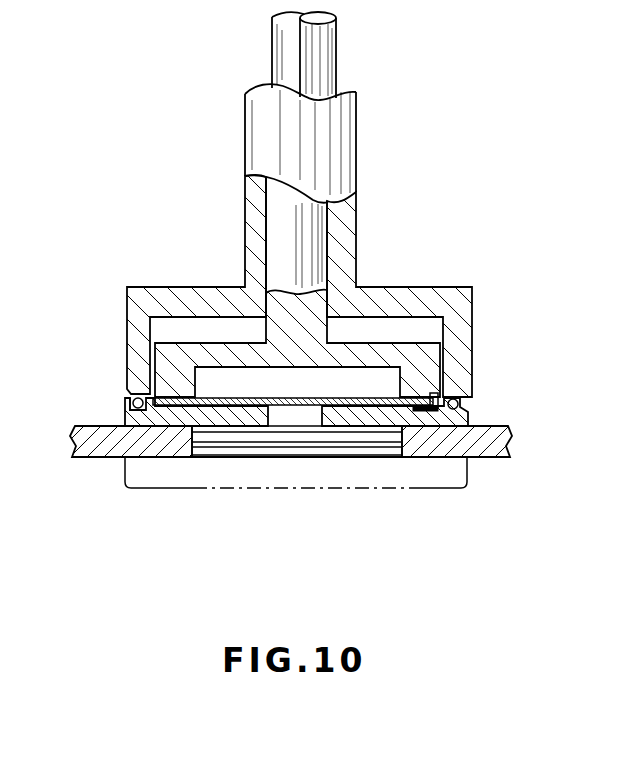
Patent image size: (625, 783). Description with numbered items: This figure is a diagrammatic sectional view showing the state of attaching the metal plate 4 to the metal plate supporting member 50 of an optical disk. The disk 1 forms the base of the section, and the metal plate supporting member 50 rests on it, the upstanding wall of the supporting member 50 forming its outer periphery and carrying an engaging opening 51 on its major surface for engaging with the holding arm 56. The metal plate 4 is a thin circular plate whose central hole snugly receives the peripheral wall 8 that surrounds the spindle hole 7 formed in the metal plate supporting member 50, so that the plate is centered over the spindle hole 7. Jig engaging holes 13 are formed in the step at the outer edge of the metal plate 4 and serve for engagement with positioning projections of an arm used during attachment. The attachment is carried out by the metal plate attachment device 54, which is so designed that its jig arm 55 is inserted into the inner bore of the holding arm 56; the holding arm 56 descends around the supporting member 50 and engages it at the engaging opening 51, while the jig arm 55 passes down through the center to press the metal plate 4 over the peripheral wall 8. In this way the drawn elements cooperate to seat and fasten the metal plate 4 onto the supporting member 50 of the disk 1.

The disk 1 is at (487, 456).
The metal plate 4 is at (240, 402).
The spindle hole 7 is at (310, 460).
The peripheral wall 8 is at (341, 396).
The jig engaging holes 13 is at (152, 403).
The metal plate supporting member 50 is at (125, 410).
The engaging opening 51 is at (130, 392).
The metal plate attachment device 54 is at (381, 125).
The jig arm 55 is at (305, 263).
The holding arm 56 is at (171, 303).